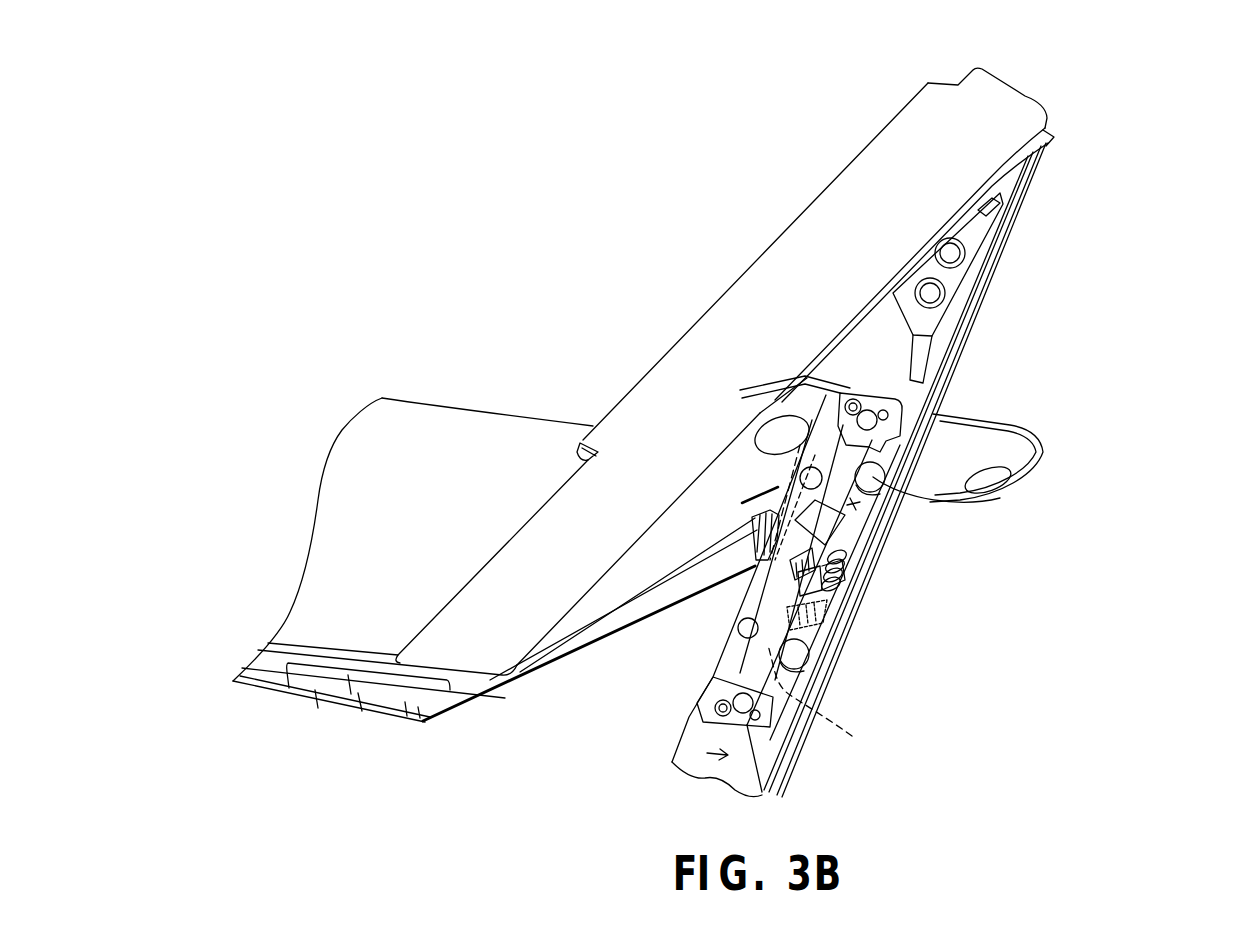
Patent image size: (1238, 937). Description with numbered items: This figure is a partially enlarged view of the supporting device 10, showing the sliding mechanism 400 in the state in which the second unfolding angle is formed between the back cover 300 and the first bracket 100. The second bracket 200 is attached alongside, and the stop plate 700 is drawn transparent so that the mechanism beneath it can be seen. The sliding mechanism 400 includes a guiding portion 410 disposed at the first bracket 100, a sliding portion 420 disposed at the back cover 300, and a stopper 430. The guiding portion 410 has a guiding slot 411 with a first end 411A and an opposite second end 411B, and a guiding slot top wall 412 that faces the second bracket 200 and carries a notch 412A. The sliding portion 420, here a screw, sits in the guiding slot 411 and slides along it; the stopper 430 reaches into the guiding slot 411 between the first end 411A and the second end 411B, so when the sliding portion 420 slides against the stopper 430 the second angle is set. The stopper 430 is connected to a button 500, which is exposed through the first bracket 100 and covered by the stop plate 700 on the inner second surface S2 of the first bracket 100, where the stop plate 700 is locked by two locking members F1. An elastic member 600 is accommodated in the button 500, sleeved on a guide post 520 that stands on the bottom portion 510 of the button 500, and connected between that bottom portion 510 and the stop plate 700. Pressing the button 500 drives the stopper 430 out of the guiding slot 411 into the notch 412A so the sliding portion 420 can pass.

The supporting device 10 is at (1216, 826).
The first bracket 100 is at (950, 352).
The second bracket 200 is at (838, 197).
The back cover 300 is at (430, 422).
The sliding mechanism 400 is at (206, 78).
The guiding portion 410 is at (578, 452).
The guiding slot 411 is at (206, 222).
The first end 411A is at (987, 404).
The second end 411B is at (826, 795).
The guiding slot top wall 412 is at (817, 453).
The notch 412A is at (776, 562).
The sliding portion 420 is at (917, 543).
The stopper 430 is at (890, 653).
The button 500 is at (932, 596).
The bottom portion 510 is at (812, 566).
The guide post 520 is at (868, 600).
The elastic member 600 is at (852, 568).
The stop plate 700 is at (834, 698).
The locking members F1 is at (960, 520).
The second surface S2 is at (693, 750).